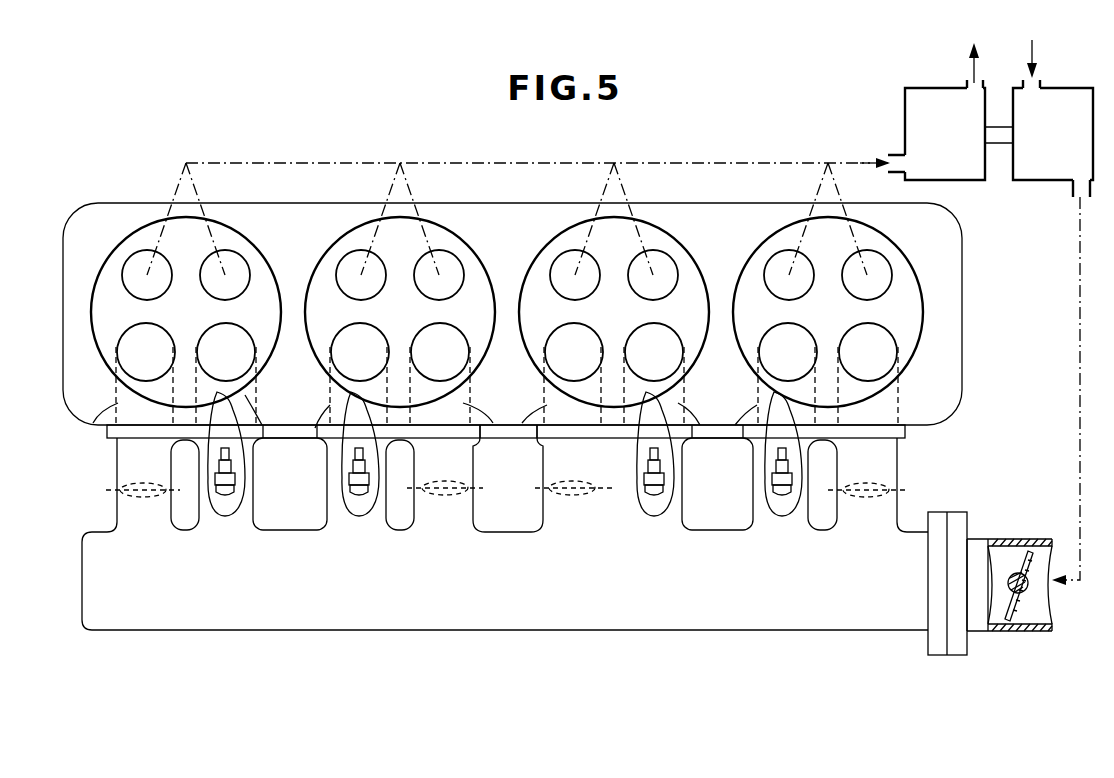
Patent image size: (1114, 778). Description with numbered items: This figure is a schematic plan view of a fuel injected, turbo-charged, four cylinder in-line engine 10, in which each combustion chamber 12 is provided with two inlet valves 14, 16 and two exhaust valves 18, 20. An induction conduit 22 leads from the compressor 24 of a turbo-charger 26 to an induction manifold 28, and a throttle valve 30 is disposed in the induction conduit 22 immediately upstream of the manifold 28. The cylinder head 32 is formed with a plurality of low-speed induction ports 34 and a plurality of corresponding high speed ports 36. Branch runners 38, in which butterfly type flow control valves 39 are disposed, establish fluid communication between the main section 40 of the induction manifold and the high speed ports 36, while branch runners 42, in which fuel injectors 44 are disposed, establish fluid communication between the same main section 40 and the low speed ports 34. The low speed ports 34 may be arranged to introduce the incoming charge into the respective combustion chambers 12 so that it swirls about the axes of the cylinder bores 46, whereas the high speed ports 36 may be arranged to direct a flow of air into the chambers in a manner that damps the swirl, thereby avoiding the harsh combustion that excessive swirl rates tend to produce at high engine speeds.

The engine 10 is at (265, 148).
The combustion chamber 12 is at (170, 322).
The inlet valve 14 is at (244, 352).
The inlet valve 16 is at (130, 343).
The exhaust valve 18 is at (127, 257).
The exhaust valve 20 is at (325, 258).
The induction conduit 22 is at (1073, 300).
The compressor 24 is at (1050, 172).
The turbo-charger 26 is at (890, 80).
The induction manifold 28 is at (838, 641).
The throttle valve 30 is at (1020, 602).
The cylinder head 32 is at (945, 423).
The low-speed induction port 34 is at (315, 428).
The high speed port 36 is at (93, 423).
The branch runner 38 is at (118, 503).
The flow control valve 39 is at (146, 497).
The main section 40 is at (435, 632).
The branch runner 42 is at (333, 497).
The fuel injector 44 is at (226, 497).
The cylinder bore 46 is at (92, 316).